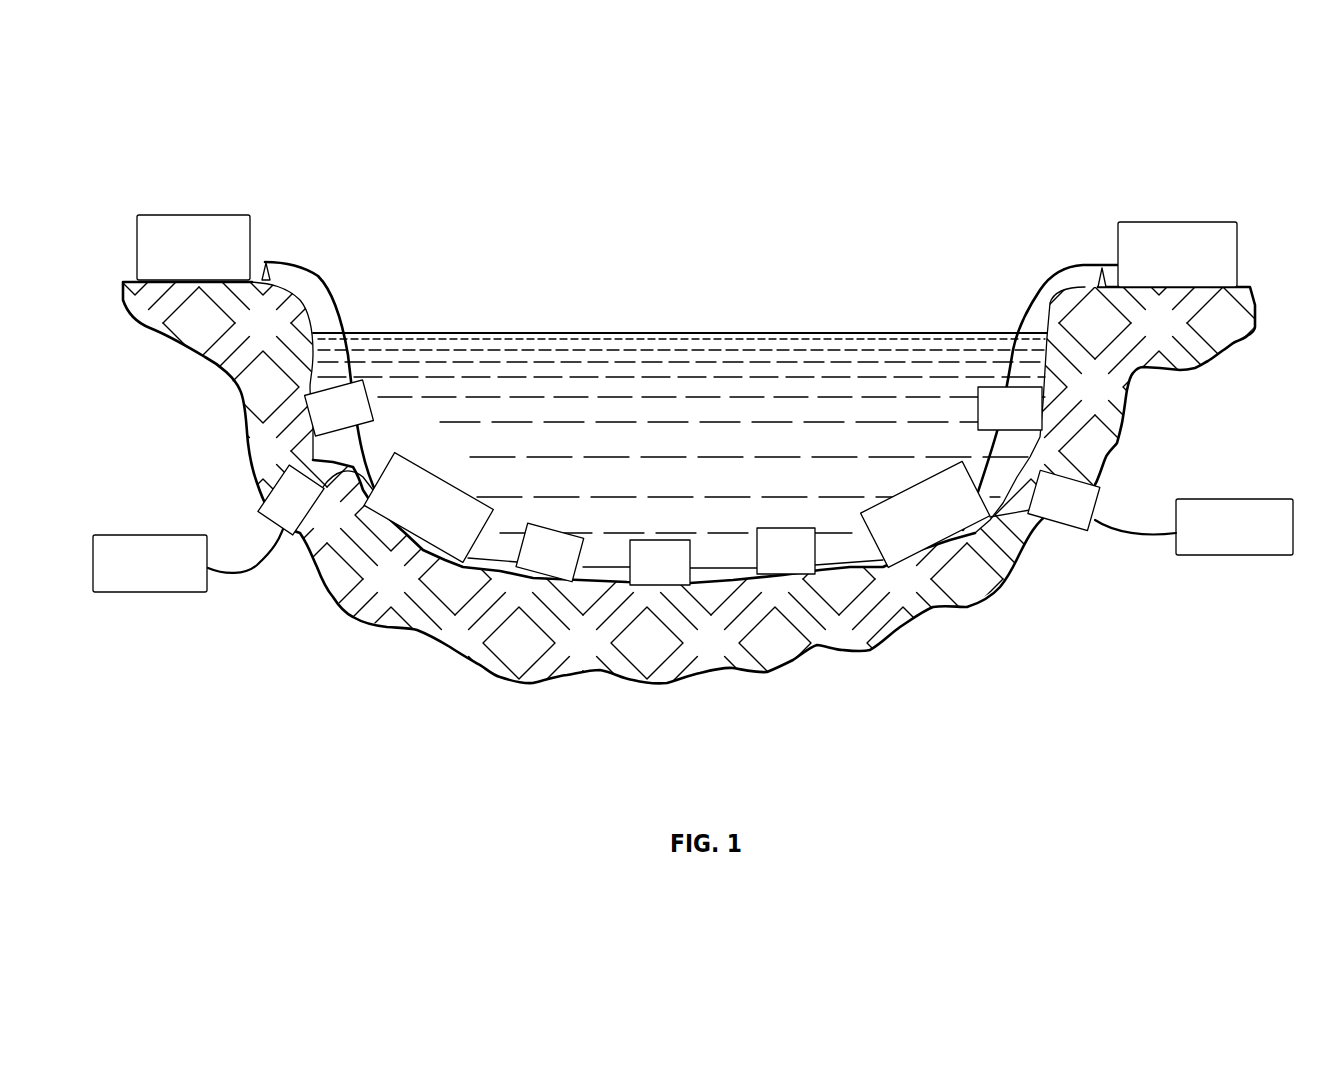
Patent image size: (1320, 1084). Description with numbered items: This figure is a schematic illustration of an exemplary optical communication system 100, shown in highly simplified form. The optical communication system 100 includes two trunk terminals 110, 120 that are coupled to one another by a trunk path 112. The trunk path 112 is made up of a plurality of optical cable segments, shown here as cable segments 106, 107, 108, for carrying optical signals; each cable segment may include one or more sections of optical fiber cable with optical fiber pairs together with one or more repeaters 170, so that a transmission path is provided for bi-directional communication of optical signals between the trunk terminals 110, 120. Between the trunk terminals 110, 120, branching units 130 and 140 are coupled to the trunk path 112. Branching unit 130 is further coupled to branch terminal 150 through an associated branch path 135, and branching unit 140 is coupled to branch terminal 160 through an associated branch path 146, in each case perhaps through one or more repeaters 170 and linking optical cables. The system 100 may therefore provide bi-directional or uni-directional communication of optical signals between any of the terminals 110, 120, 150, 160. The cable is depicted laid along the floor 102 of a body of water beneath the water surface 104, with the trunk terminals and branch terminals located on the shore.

The optical communication system 100 is at (686, 220).
The seabed / floor of body of water 102 is at (812, 578).
The water surface 104 is at (725, 333).
The cable segment 106 is at (335, 305).
The cable segment 107 is at (508, 548).
The cable segment 108 is at (1023, 307).
The trunk terminal 110 is at (198, 215).
The trunk path 112 is at (632, 404).
The trunk terminal 120 is at (1163, 222).
The branching unit 130 is at (448, 476).
The branch path 135 is at (222, 584).
The branching unit 140 is at (913, 483).
The branch path 146 is at (1165, 534).
The branch terminal 150 is at (148, 593).
The branch terminal 160 is at (1286, 557).
The repeater 170 is at (373, 410).